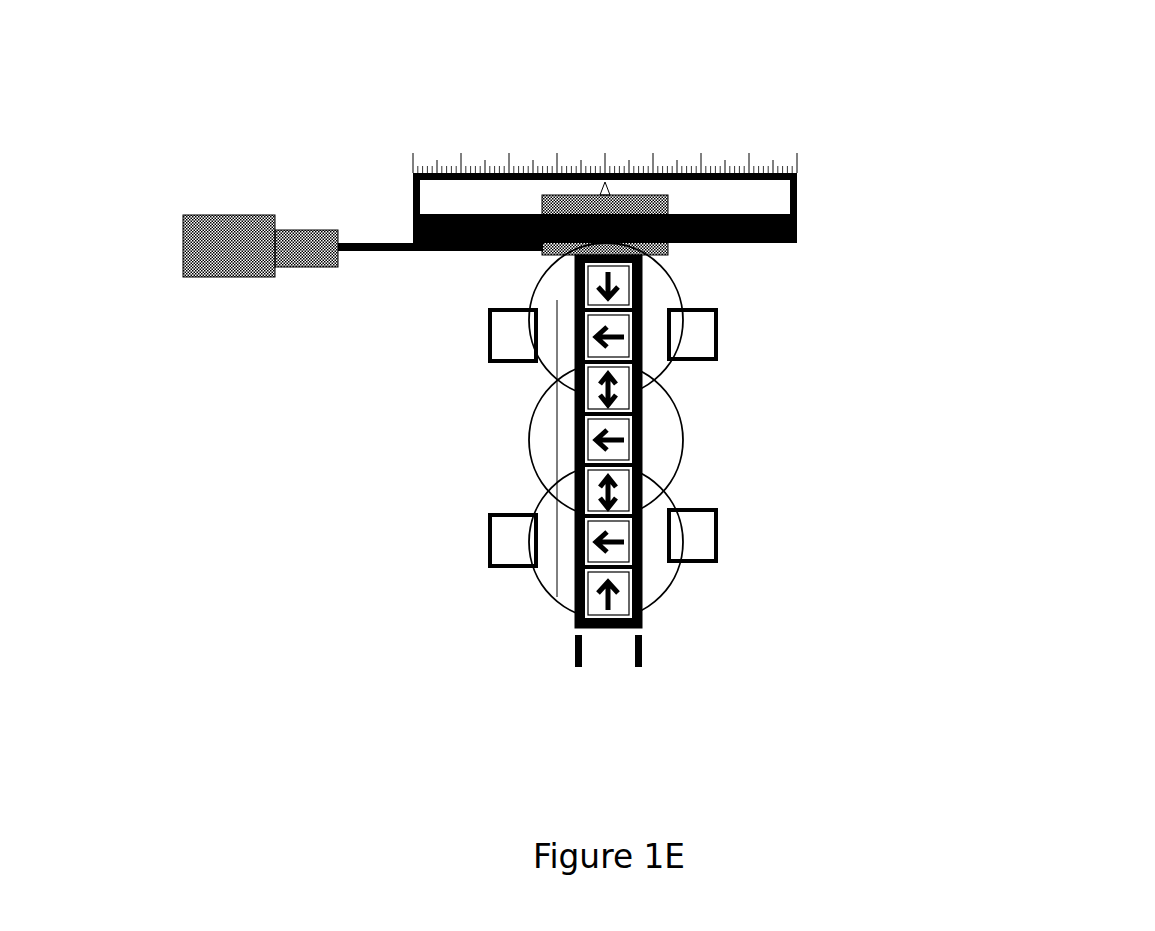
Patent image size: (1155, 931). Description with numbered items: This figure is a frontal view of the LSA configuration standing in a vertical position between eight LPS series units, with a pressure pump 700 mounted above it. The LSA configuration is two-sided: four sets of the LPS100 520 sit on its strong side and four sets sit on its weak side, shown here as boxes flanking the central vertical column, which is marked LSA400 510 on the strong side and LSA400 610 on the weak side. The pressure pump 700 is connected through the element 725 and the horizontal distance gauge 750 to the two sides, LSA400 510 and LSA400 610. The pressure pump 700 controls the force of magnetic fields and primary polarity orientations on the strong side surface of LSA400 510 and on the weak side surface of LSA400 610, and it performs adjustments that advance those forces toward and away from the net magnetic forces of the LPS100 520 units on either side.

The pressure pump 700 is at (270, 207).
The horizontal distance gauge 750 is at (806, 180).
The pressure pump connection 725 is at (676, 257).
The LPS100 520 is at (487, 338).
The LSA400 strong side 510 is at (573, 659).
The LSA400 weak side 610 is at (644, 659).